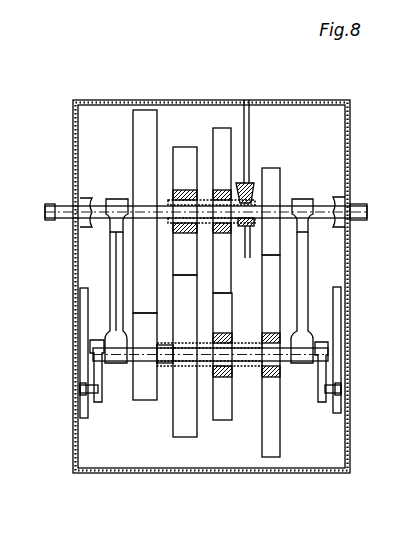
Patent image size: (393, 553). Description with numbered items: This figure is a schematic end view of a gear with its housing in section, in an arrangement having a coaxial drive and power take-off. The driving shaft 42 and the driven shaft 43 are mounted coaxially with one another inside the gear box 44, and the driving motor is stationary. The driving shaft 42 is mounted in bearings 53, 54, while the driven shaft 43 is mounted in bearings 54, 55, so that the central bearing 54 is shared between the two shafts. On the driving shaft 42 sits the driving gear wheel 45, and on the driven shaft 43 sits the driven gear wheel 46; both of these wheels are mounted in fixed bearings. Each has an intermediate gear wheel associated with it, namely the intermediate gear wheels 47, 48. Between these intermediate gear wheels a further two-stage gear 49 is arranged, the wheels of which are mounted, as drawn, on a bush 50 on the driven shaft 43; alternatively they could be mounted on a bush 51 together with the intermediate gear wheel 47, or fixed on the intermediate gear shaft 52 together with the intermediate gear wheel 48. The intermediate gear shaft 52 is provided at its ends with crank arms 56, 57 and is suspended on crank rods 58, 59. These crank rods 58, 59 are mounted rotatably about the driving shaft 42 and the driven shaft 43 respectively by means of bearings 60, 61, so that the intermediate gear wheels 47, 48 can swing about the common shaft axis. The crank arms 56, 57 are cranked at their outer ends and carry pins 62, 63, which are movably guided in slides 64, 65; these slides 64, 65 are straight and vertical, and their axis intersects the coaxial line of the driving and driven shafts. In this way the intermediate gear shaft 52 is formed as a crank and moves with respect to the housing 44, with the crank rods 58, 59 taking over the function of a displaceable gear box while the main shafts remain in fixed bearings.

The driving shaft 42 is at (356, 204).
The driven shaft 43 is at (57, 203).
The gear box 44 is at (173, 474).
The driving gear wheel 45 is at (272, 188).
The driven gear wheel 46 is at (146, 137).
The intermediate gear wheel 47 is at (270, 420).
The intermediate gear wheel 48 is at (147, 390).
The two-stage gear 49 is at (204, 190).
The bush 50 is at (166, 190).
The bush 51 is at (248, 368).
The intermediate gear shaft 52 is at (168, 356).
The bearing 53 is at (357, 234).
The bearing 54 is at (247, 258).
The bearing 55 is at (77, 225).
The crank arm 56 is at (323, 368).
The crank arm 57 is at (98, 367).
The crank rod 58 is at (302, 267).
The crank rod 59 is at (115, 260).
The bearing 60 is at (303, 205).
The bearing 61 is at (115, 206).
The pin 62 is at (331, 392).
The pin 63 is at (88, 388).
The slide 64 is at (340, 308).
The slide 65 is at (82, 308).